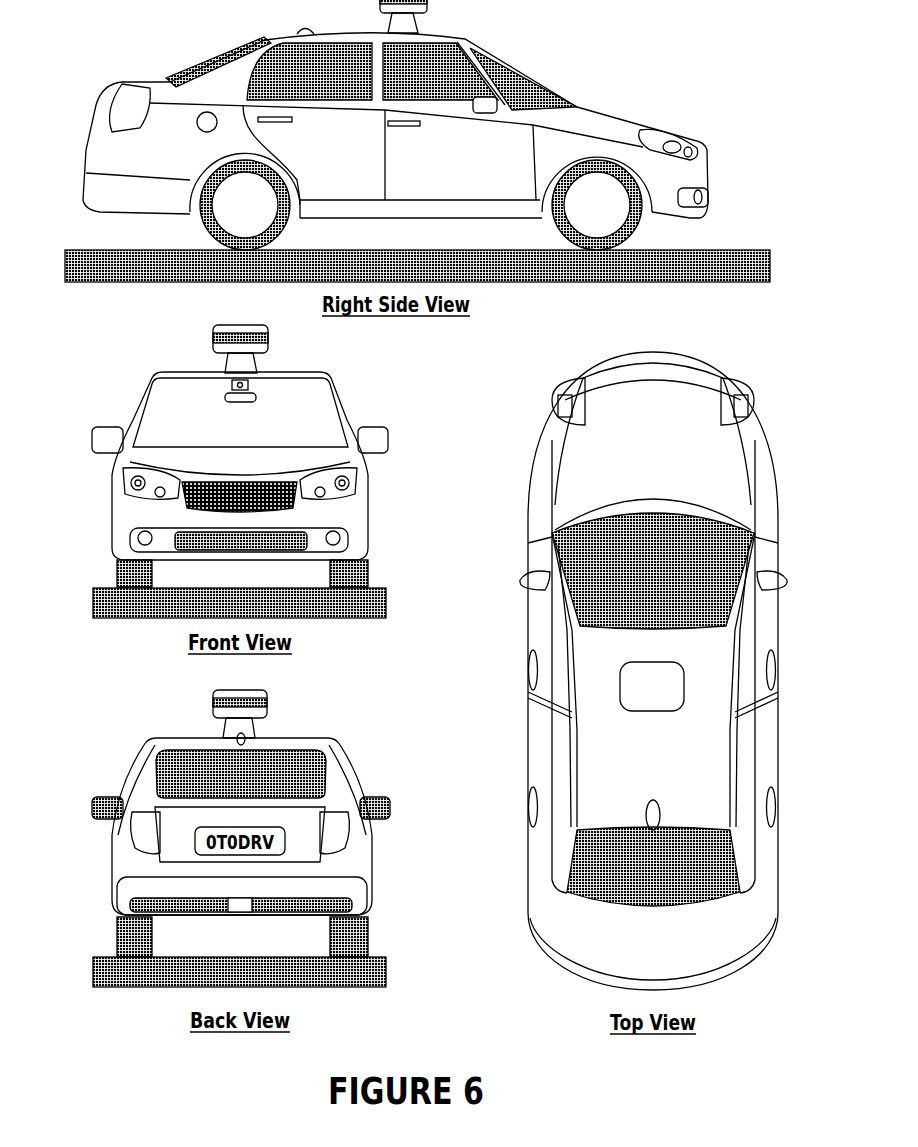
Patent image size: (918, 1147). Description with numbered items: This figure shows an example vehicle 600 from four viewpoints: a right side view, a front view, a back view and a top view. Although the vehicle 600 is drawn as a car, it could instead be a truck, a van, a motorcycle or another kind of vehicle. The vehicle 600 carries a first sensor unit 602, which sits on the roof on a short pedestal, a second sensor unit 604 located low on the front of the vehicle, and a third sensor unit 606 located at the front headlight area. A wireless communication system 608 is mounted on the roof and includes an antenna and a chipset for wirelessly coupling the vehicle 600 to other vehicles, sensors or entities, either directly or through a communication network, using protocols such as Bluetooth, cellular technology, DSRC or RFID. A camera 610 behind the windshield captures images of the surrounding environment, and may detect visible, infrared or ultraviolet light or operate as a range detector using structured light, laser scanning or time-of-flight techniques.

The vehicle 600 is at (78, 70).
The first sensor unit 602 is at (430, 10).
The second sensor unit 604 is at (708, 198).
The third sensor unit 606 is at (690, 150).
The wireless communication system 608 is at (300, 26).
The camera 610 is at (250, 386).